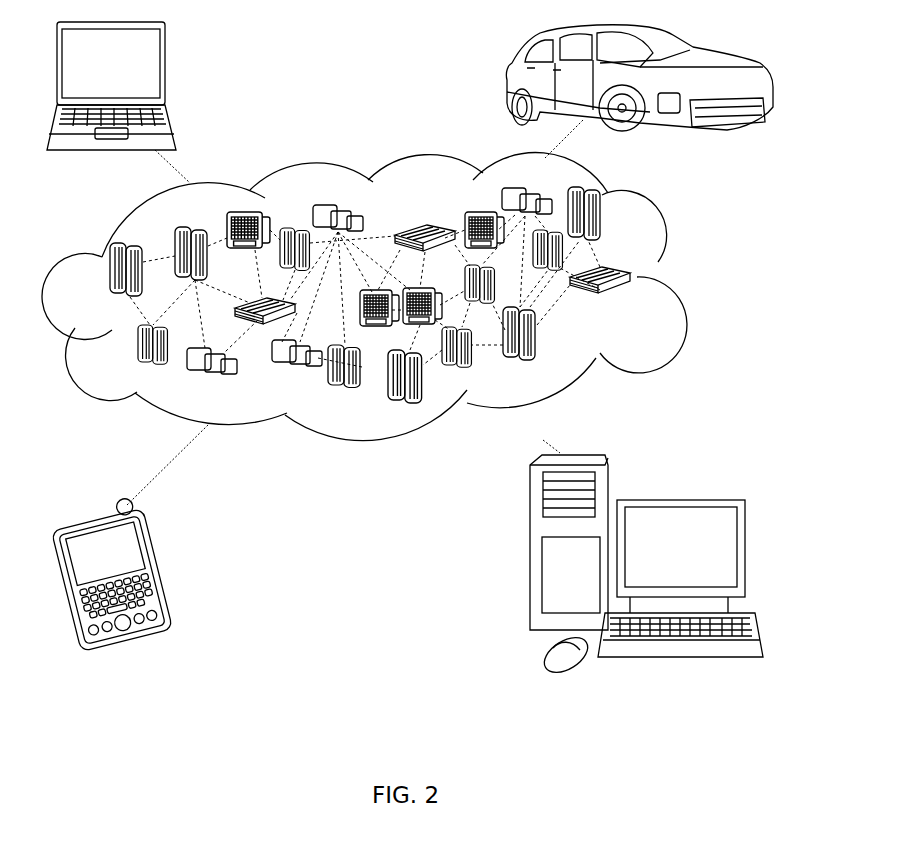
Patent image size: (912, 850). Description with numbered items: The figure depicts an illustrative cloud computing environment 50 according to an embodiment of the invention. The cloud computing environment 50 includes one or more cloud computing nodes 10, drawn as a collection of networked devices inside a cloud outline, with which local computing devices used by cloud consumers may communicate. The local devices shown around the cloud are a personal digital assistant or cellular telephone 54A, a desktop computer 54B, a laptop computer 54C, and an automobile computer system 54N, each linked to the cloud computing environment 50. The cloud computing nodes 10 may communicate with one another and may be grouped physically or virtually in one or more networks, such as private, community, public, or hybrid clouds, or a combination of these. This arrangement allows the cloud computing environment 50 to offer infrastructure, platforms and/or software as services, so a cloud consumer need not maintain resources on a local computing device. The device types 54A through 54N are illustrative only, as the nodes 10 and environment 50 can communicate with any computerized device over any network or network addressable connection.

The cloud computing node 10 is at (632, 302).
The cloud computing environment 50 is at (678, 281).
The personal digital assistant or cellular telephone 54A is at (158, 568).
The desktop computer 54B is at (678, 498).
The laptop computer 54C is at (165, 72).
The automobile computer system 54N is at (507, 85).